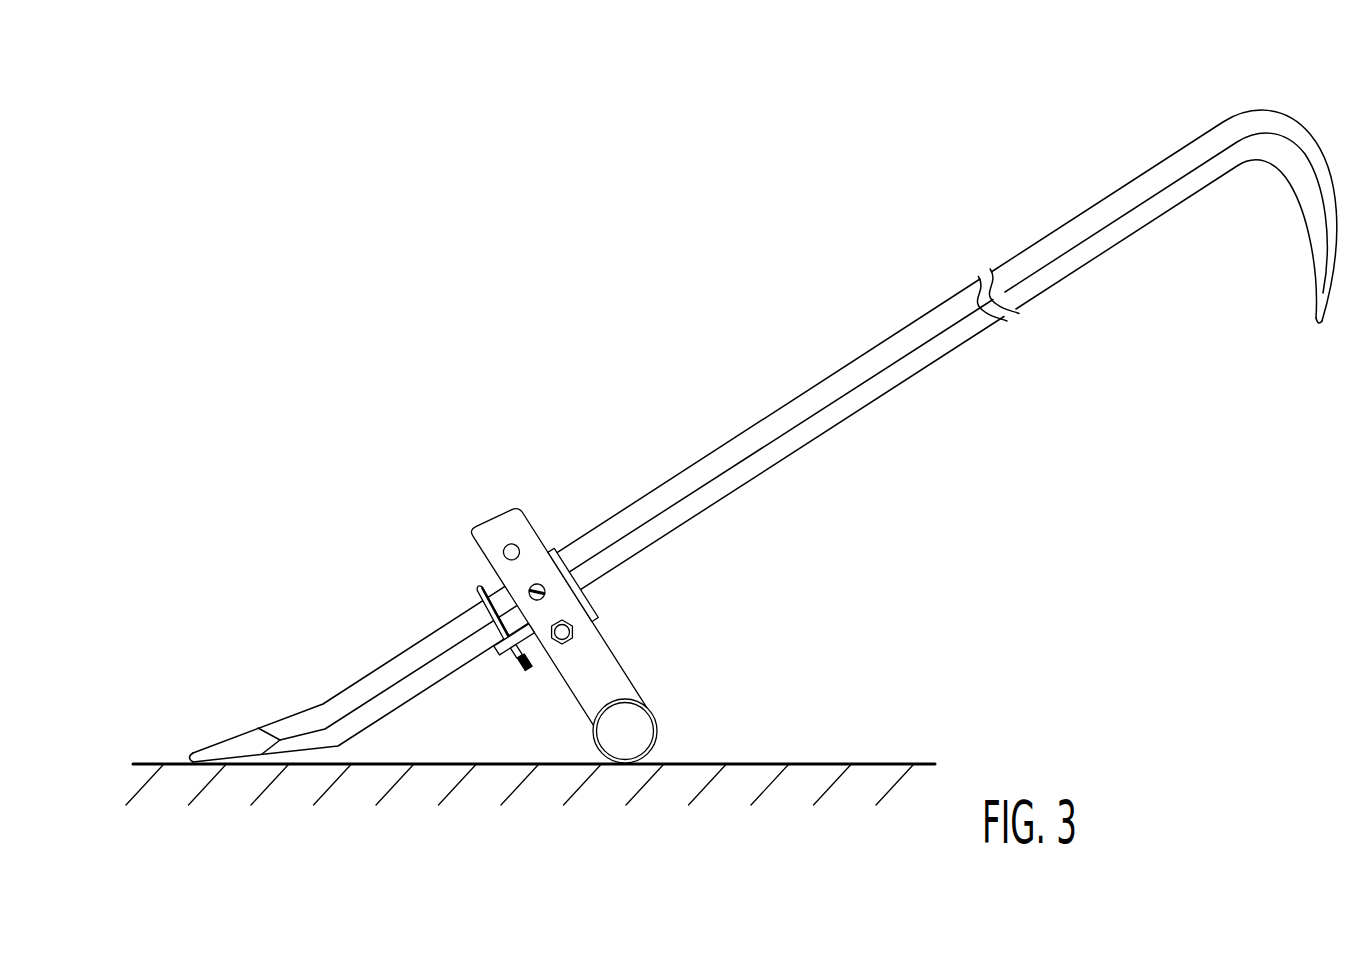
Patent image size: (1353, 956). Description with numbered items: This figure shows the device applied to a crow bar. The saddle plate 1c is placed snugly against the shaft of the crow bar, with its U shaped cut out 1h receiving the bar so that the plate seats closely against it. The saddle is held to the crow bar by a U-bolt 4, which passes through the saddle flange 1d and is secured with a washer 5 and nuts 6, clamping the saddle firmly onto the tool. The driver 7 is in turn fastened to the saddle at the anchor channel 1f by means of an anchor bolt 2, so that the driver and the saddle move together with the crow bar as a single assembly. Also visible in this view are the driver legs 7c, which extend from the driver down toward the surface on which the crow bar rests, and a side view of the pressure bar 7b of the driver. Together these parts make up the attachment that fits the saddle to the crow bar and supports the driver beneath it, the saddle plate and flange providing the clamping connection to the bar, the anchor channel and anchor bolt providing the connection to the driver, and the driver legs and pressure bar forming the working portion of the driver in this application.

The saddle plate 1c is at (590, 610).
The saddle flange 1d is at (490, 652).
The anchor channel 1f is at (582, 628).
The U shaped cut out 1h is at (583, 587).
The anchor bolt 2 is at (572, 643).
The U-bolt 4 is at (477, 587).
The washer 5 is at (509, 658).
The nuts 6 is at (533, 661).
The driver 7 is at (658, 725).
The pressure bar 7b is at (625, 738).
The driver legs 7c is at (632, 675).